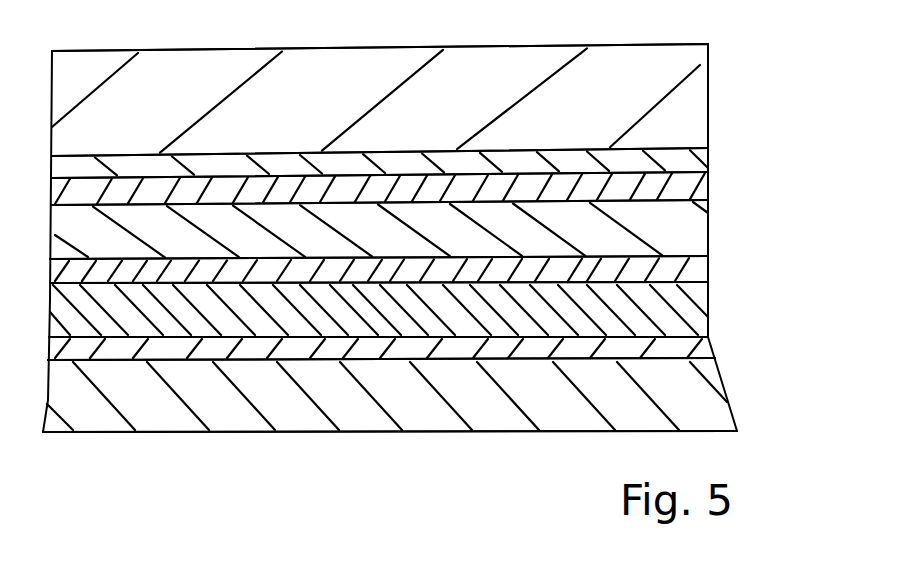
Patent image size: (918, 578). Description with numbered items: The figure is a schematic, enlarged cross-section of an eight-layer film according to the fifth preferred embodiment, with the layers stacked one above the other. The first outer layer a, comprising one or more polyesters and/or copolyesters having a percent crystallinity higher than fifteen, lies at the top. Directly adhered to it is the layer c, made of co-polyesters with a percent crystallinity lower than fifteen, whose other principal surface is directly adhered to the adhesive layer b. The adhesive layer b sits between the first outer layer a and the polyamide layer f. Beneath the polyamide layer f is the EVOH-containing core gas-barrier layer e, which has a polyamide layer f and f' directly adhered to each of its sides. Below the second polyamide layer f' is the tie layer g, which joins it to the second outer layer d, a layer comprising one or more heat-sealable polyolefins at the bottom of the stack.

The first outer layer a is at (677, 63).
The co-polyester layer c is at (672, 151).
The adhesive layer b is at (690, 188).
The polyamide layer f is at (421, 228).
The EVOH-containing core layer e is at (695, 265).
The polyamide layer f' is at (427, 309).
The tie layer g is at (703, 342).
The second outer layer d is at (713, 418).